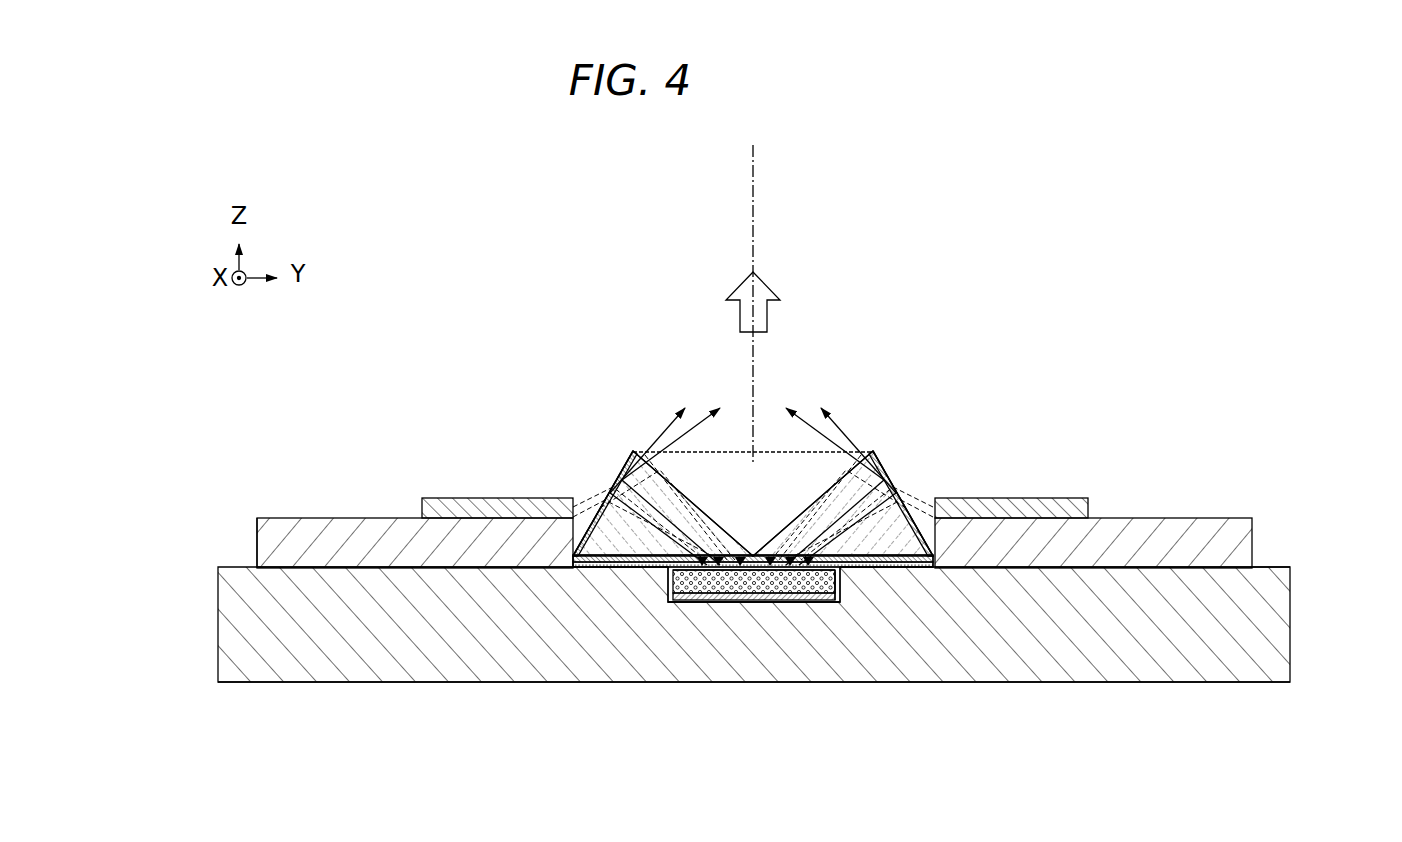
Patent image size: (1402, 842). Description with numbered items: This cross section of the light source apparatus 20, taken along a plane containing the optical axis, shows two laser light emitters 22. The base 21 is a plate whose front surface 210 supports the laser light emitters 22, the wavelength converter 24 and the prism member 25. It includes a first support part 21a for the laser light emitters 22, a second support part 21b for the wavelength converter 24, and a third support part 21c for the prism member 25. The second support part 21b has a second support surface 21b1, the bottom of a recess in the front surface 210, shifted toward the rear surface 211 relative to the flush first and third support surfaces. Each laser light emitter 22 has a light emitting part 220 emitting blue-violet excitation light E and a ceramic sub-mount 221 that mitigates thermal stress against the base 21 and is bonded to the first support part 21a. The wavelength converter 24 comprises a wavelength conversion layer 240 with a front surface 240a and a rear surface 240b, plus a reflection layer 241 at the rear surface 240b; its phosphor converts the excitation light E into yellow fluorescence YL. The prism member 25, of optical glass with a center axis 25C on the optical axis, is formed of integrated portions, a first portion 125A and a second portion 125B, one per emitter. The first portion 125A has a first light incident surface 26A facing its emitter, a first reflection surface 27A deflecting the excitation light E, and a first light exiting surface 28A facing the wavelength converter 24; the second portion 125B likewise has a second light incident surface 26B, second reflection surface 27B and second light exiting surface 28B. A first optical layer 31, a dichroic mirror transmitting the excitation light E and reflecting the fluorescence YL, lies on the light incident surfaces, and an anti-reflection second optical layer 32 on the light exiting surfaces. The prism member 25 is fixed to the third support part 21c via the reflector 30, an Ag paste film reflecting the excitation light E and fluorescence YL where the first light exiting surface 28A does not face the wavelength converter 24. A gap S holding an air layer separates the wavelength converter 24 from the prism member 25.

The light source apparatus 20 is at (1118, 295).
The base 21 is at (1225, 665).
The first support part 21a is at (1013, 567).
The second support part 21b is at (839, 592).
The second support surface 21b1 is at (748, 602).
The third support part 21c is at (562, 568).
The laser light emitters 22 is at (462, 490).
The light emitting part 220 is at (430, 508).
The sub-mount 221 is at (270, 537).
The front surface 210 is at (1265, 567).
The rear surface 211 is at (1067, 683).
The wavelength converter 24 is at (729, 662).
The wavelength conversion layer 240 is at (672, 586).
The front surface 240a is at (756, 566).
The rear surface 240b is at (818, 571).
The reflection layer 241 is at (688, 601).
The prism member 25 is at (777, 449).
The center axis 25C is at (755, 188).
The first light incident surface 26A is at (612, 487).
The second light incident surface 26B is at (893, 487).
The first reflection surface 27A is at (670, 478).
The second reflection surface 27B is at (836, 478).
The first light exiting surface 28A is at (647, 570).
The second light exiting surface 28B is at (893, 570).
The reflector 30 is at (928, 565).
The first optical layer 31 is at (610, 492).
The second optical layer 32 is at (912, 567).
The first portion 125A is at (633, 441).
The second portion 125B is at (875, 441).
The gap S is at (837, 578).
The excitation light E is at (760, 287).
The fluorescence YL is at (672, 415).